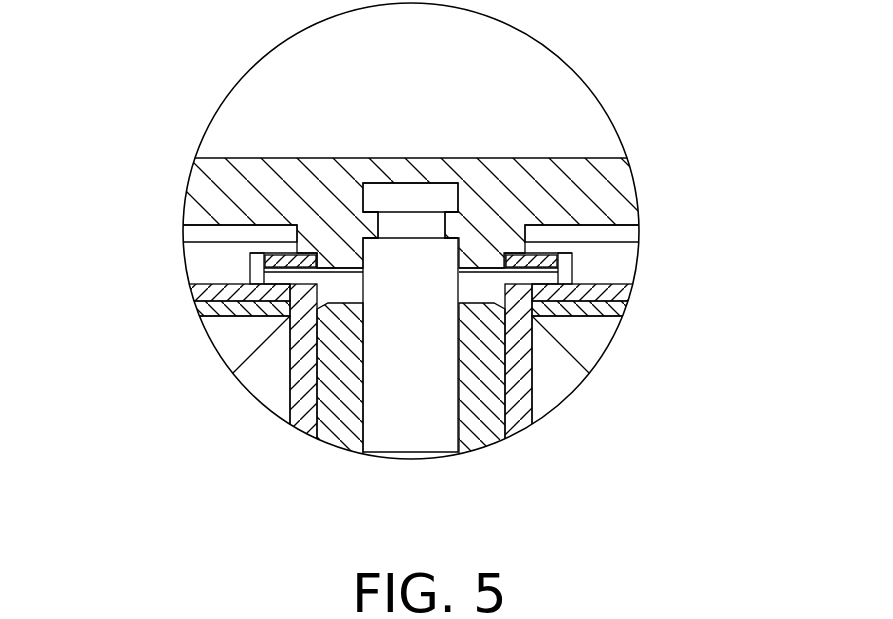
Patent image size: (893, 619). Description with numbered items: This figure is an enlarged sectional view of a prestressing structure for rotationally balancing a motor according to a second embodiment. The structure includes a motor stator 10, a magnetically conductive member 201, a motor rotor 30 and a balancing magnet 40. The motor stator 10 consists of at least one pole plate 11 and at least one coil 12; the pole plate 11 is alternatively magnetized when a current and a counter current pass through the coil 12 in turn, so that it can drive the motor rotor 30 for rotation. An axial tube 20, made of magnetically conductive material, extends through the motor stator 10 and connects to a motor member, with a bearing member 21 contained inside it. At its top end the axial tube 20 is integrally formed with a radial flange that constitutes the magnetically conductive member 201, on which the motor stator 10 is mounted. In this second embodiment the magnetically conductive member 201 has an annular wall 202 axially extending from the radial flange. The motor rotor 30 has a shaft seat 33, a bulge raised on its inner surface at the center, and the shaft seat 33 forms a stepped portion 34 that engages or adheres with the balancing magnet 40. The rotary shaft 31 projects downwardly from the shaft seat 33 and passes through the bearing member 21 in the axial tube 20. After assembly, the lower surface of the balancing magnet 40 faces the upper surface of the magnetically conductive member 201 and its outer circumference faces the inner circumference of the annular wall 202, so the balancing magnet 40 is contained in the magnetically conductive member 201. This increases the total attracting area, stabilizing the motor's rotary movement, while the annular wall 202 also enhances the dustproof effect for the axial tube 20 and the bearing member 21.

The motor stator 10 is at (645, 352).
The pole plate 11 is at (628, 285).
The coil 12 is at (562, 377).
The axial tube 20 is at (303, 386).
The magnetically conductive member 201 is at (197, 293).
The annular wall 202 is at (257, 263).
The bearing member 21 is at (345, 397).
The motor rotor 30 is at (572, 122).
The rotary shaft 31 is at (430, 265).
The shaft seat 33 is at (345, 233).
The stepped portion 34 is at (297, 256).
The balancing magnet 40 is at (268, 241).